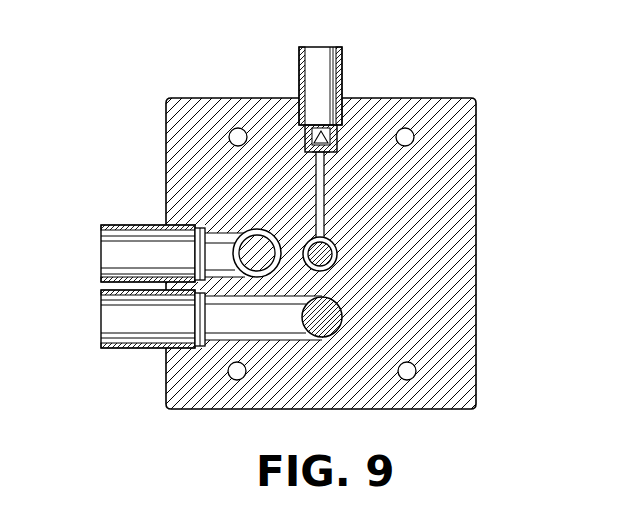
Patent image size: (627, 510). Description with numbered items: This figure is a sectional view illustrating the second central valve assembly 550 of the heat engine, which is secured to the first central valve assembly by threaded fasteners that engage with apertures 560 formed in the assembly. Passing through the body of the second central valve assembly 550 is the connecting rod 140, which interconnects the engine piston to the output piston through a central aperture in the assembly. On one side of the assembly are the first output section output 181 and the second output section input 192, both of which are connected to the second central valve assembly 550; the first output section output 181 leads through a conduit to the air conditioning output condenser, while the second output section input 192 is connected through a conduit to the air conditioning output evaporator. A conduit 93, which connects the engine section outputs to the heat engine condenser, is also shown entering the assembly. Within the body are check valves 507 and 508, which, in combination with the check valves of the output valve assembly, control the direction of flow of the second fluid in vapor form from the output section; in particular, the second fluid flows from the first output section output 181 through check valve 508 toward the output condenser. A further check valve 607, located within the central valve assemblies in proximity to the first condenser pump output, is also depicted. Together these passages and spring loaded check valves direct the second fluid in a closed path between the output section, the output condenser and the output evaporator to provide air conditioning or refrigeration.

The second central valve assembly 550 is at (453, 115).
The conduit 93 is at (318, 63).
The check valve 607 is at (335, 140).
The connecting rod 140 is at (320, 254).
The check valve 507 is at (253, 255).
The check valve 508 is at (320, 325).
The second output section input 192 is at (137, 250).
The first output section output 181 is at (115, 328).
The apertures 560 is at (238, 137).